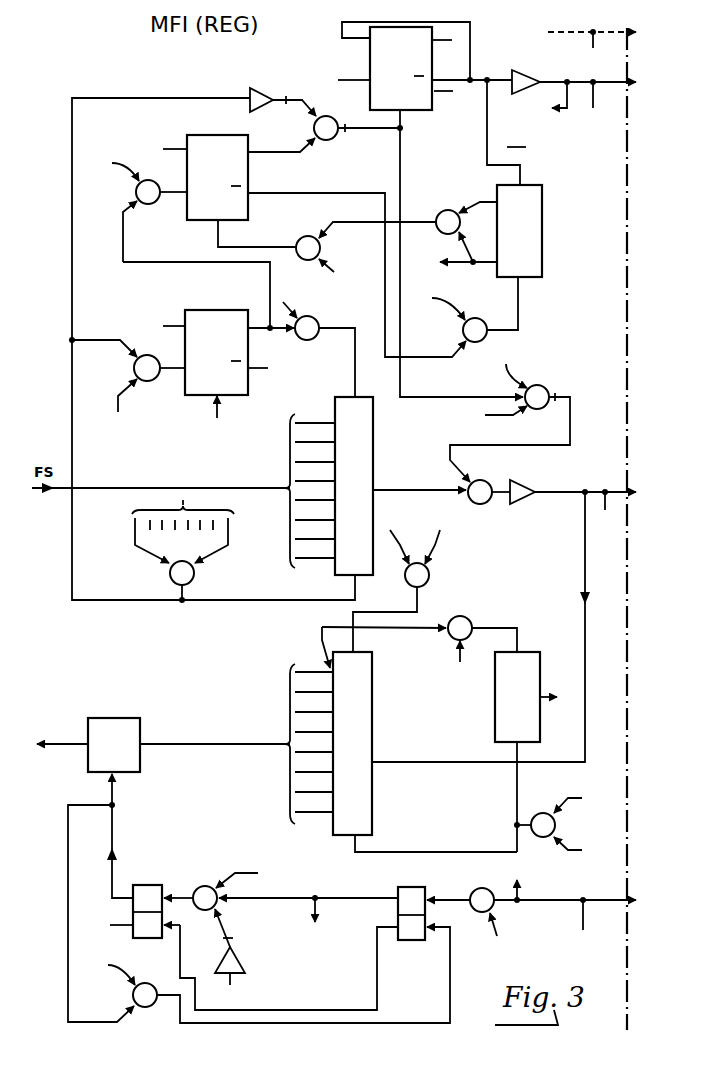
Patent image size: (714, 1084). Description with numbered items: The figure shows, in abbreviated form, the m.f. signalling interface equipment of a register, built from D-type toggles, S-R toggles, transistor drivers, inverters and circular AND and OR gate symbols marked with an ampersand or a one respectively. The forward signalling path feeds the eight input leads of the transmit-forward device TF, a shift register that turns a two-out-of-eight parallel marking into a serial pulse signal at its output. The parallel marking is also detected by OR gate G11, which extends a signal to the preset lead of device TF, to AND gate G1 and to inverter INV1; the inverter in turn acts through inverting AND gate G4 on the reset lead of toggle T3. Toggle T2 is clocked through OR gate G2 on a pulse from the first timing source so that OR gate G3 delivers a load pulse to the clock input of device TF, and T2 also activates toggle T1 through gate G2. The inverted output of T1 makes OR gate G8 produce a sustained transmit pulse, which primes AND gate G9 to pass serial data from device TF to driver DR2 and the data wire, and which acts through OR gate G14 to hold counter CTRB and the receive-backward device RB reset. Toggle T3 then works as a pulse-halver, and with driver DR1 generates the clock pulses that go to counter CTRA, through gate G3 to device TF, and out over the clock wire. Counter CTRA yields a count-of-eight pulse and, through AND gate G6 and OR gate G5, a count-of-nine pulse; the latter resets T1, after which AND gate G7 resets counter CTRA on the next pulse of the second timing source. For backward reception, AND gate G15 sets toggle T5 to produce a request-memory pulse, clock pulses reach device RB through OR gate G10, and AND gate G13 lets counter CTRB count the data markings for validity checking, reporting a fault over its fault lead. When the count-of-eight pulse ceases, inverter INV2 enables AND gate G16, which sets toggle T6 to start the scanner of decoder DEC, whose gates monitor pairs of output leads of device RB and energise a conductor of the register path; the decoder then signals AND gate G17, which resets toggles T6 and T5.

The inverter INV1 is at (271, 90).
The inverter INV2 is at (250, 956).
The D-type toggle T1 is at (303, 237).
The D-type toggle T2 is at (208, 352).
The D-type toggle T3 is at (417, 209).
The S-R toggle T5 is at (411, 902).
The S-R toggle T6 is at (254, 938).
The AND gate G1 is at (144, 395).
The OR gate G2 is at (132, 208).
The OR gate G3 is at (321, 338).
The inverting AND gate G4 is at (324, 135).
The OR gate G5 is at (319, 252).
The AND gate G6 is at (389, 216).
The AND gate G7 is at (457, 315).
The OR gate G8 is at (522, 412).
The AND gate G9 is at (489, 500).
The OR gate G10 is at (392, 588).
The OR gate G11 is at (183, 550).
The AND gate G13 is at (482, 646).
The OR gate G14 is at (562, 826).
The AND gate G15 is at (527, 908).
The AND gate G16 is at (293, 893).
The AND gate G17 is at (262, 975).
The transistor driver DR1 is at (569, 80).
The transistor driver DR2 is at (499, 610).
The counter CTRA is at (501, 205).
The counter CTRB is at (539, 743).
The transmit-forward device TF is at (375, 497).
The receive-backward device RB is at (401, 746).
The decoder DEC is at (161, 866).